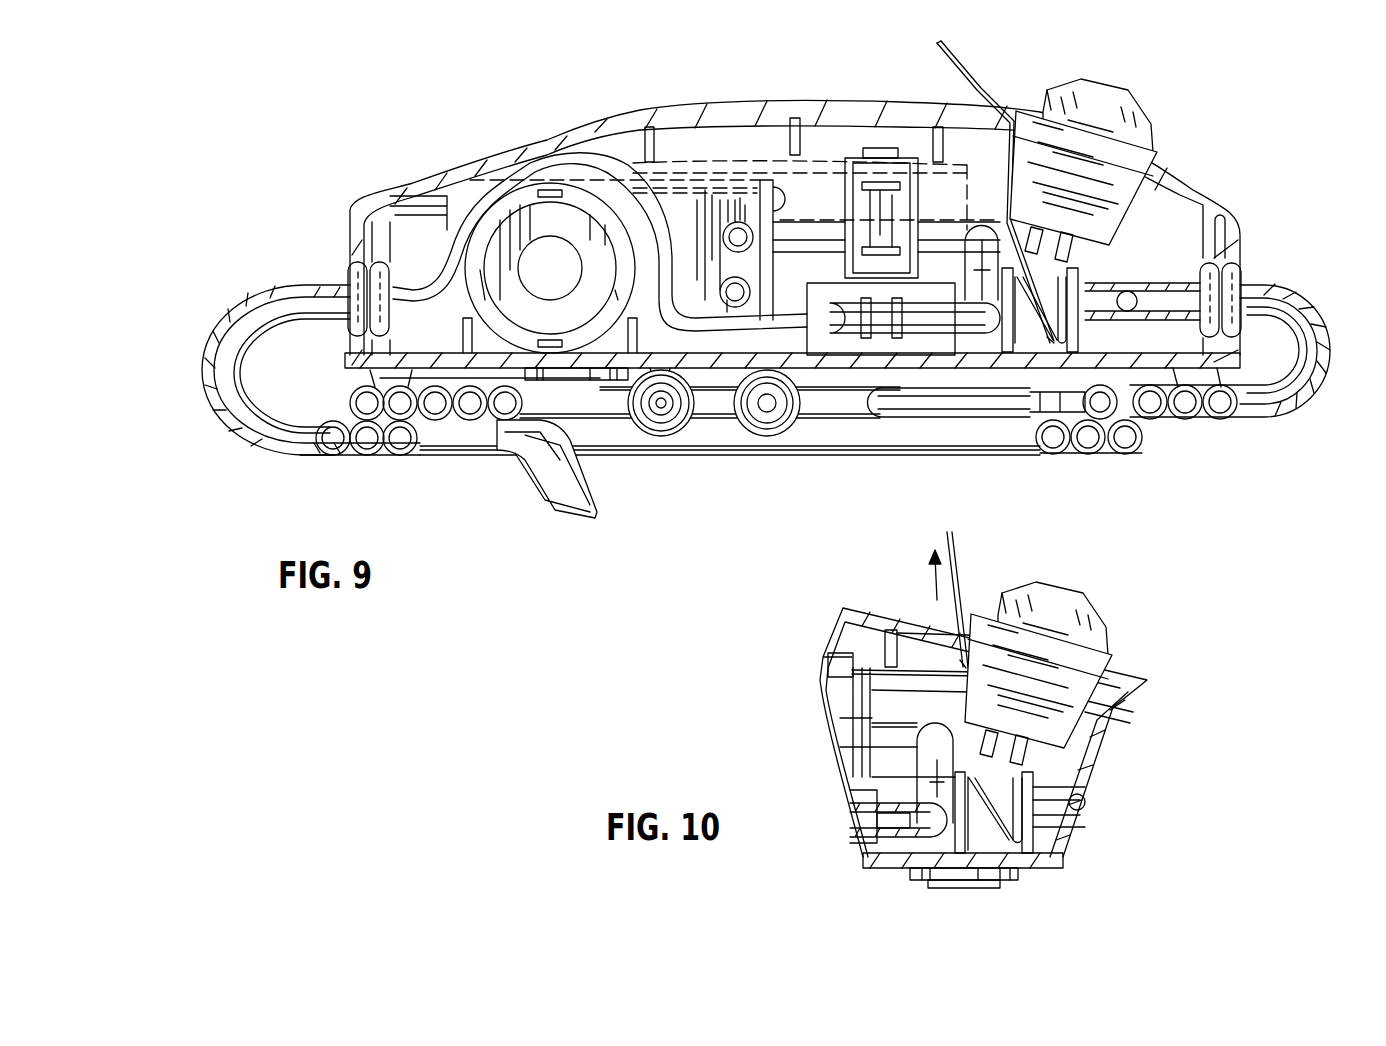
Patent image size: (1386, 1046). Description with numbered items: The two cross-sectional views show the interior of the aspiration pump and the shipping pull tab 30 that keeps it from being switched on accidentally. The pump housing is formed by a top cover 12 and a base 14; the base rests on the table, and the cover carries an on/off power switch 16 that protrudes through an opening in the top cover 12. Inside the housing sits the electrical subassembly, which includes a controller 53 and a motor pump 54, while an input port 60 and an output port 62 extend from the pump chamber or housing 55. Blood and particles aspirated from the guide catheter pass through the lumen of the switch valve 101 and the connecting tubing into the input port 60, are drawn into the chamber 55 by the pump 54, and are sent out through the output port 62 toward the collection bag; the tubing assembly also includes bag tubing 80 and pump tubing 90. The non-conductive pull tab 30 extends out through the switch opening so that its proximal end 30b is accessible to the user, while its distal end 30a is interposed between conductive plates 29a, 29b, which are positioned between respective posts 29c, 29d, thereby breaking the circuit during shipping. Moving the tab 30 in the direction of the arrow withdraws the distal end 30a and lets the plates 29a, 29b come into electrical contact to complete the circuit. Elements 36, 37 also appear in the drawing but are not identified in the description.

In FIG. 9, the top cover 12 is at (597, 120).
In FIG. 9, the pump base 14 is at (838, 345).
In FIG. 9, the on/off power switch 16 is at (1123, 123).
In FIG. 10, the on/off power switch 16 is at (1038, 673).
In FIG. 9, the conductive plate 29a is at (1043, 340).
In FIG. 10, the conductive plate 29a is at (1037, 790).
In FIG. 9, the conductive plate 29b is at (987, 223).
In FIG. 10, the conductive plate 29b is at (960, 827).
In FIG. 10, the post 29c is at (1030, 830).
In FIG. 10, the post 29d is at (955, 817).
In FIG. 9, the pull tab 30 is at (966, 66).
In FIG. 10, the pull tab 30 is at (955, 548).
In FIG. 9, the distal end of pull tab 30a is at (1045, 337).
In FIG. 10, the distal end of pull tab 30a is at (957, 670).
In FIG. 9, the proximal end of pull tab 30b is at (937, 43).
In FIG. 9, the left grommet 36 is at (347, 284).
In FIG. 9, the right grommet 37 is at (1237, 282).
In FIG. 9, the controller 53 is at (877, 173).
In FIG. 9, the motor pump 54 is at (563, 223).
In FIG. 9, the housing (chamber) 55 is at (700, 203).
In FIG. 9, the input port 60 is at (727, 307).
In FIG. 9, the output port 62 is at (740, 205).
In FIG. 9, the bag tubing 80 is at (225, 432).
In FIG. 9, the pump tubing 90 is at (1310, 403).
In FIG. 9, the switch valve 101 is at (657, 415).